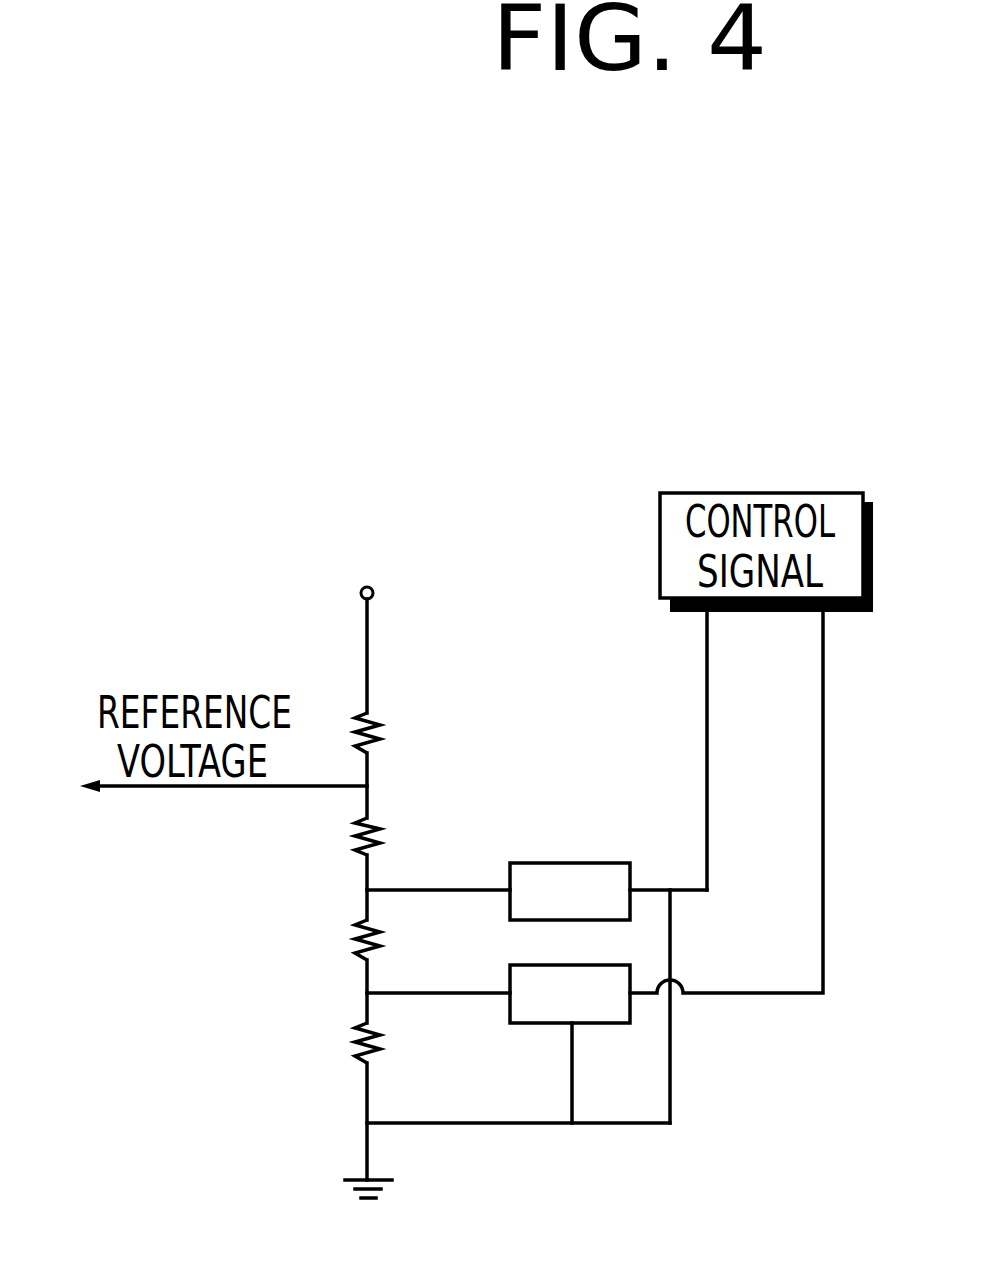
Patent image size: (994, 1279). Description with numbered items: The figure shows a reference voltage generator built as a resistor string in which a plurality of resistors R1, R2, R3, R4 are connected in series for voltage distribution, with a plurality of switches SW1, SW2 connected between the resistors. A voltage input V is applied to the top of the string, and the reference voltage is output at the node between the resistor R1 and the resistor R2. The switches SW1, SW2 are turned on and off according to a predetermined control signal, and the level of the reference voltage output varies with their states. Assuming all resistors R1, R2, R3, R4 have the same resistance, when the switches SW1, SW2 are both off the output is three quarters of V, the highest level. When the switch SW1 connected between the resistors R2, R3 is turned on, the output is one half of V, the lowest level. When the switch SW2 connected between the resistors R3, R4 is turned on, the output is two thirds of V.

The voltage input V is at (368, 569).
The resistor R1 is at (394, 737).
The resistor R2 is at (394, 839).
The resistor R3 is at (394, 944).
The resistor R4 is at (394, 1047).
The switch SW1 is at (570, 891).
The switch SW2 is at (570, 994).